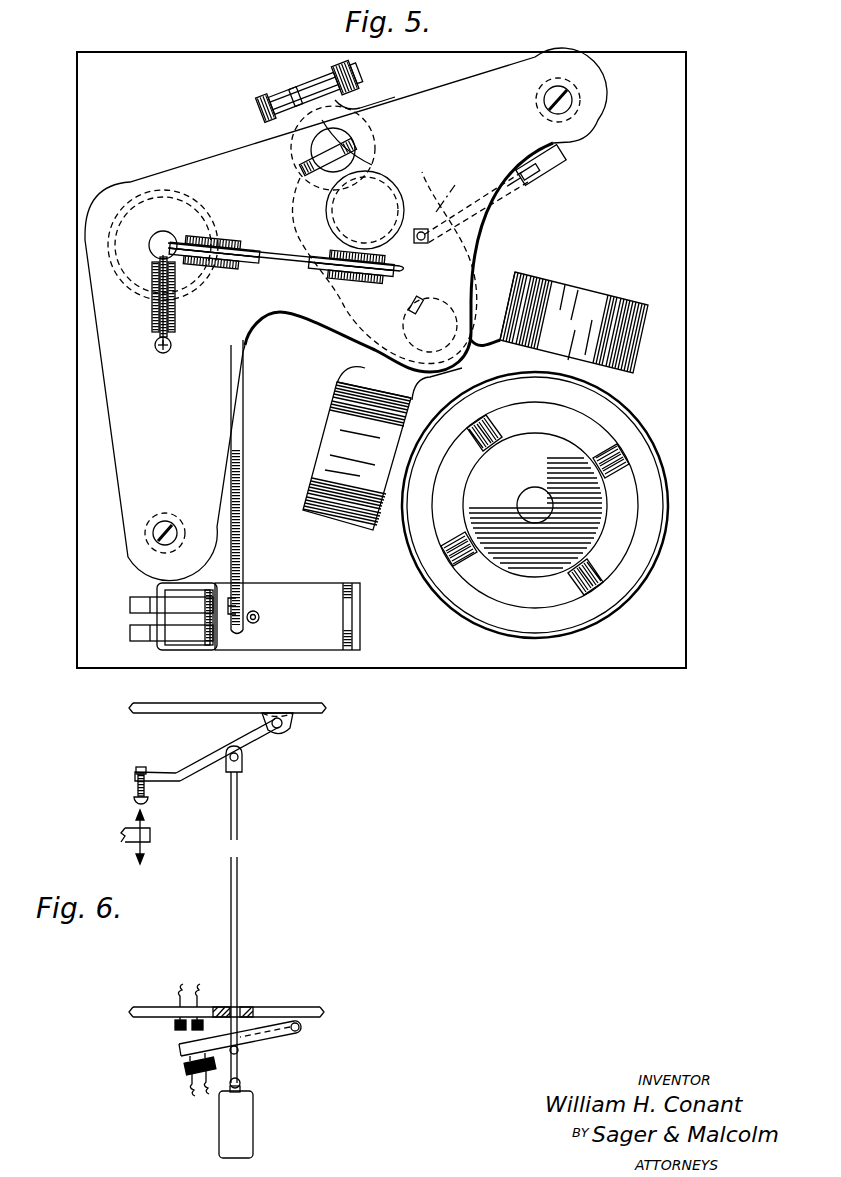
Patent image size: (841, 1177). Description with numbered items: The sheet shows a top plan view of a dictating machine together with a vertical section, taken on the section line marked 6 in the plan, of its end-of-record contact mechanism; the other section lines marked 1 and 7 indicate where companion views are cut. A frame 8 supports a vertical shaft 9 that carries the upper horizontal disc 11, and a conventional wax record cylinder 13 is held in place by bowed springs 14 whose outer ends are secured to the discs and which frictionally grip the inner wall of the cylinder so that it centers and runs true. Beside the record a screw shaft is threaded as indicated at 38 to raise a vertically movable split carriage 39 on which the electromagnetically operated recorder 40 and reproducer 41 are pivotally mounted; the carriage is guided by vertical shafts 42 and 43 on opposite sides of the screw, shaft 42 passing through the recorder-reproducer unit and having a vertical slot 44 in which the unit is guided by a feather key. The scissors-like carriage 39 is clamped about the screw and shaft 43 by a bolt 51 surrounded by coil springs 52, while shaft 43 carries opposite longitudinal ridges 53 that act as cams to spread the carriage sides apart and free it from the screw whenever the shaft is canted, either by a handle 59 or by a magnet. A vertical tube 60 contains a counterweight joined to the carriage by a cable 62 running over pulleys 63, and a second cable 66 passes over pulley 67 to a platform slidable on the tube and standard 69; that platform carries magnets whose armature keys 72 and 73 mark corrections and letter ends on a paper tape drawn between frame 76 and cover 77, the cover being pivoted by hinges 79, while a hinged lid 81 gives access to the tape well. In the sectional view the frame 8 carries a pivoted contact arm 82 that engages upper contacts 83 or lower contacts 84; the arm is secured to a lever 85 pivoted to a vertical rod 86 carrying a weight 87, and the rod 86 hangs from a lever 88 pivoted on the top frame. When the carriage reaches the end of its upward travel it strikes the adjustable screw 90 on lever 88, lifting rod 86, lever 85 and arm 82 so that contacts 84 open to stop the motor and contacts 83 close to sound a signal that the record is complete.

In FIG. 5, the section line 1- 1 is at (322, 125).
In FIG. 5, the section line 6- 6 is at (568, 152).
In FIG. 5, the section line 7- 7 is at (163, 228).
In FIG. 6, the frame 8 is at (230, 997).
In FIG. 5, the vertical shaft 9 is at (517, 502).
In FIG. 5, the upper horizontal disc 11 is at (539, 450).
In FIG. 5, the wax record cylinder 13 is at (618, 585).
In FIG. 5, the springs 14 is at (478, 440).
In FIG. 5, the screw 38 is at (385, 200).
In FIG. 5, the split carriage 39 is at (425, 190).
In FIG. 6, the split carriage 39 is at (150, 836).
In FIG. 5, the recorder 40 is at (582, 302).
In FIG. 5, the reproducer 41 is at (333, 416).
In FIG. 5, the vertical shaft 42 is at (472, 320).
In FIG. 5, the vertical shaft 43 is at (345, 146).
In FIG. 5, the vertical slot 44 is at (385, 268).
In FIG. 5, the bolt 51 is at (268, 110).
In FIG. 5, the coil springs 52 is at (280, 98).
In FIG. 5, the longitudinal ridges 53 is at (372, 136).
In FIG. 5, the handle 59 is at (372, 165).
In FIG. 5, the vertical tube 60 is at (140, 213).
In FIG. 5, the cable 62 is at (282, 262).
In FIG. 5, the pulleys 63 is at (251, 266).
In FIG. 5, the second cable 66 is at (160, 350).
In FIG. 5, the pulley 67 is at (152, 305).
In FIG. 5, the standard 69 is at (173, 518).
In FIG. 5, the armature key 72 is at (244, 505).
In FIG. 5, the armature key 73 is at (244, 622).
In FIG. 5, the frame 76 is at (130, 618).
In FIG. 5, the cover 77 is at (212, 645).
In FIG. 5, the hinges 79 is at (160, 585).
In FIG. 5, the hinged lid 81 is at (330, 616).
In FIG. 6, the contact arm 82 is at (252, 1022).
In FIG. 6, the upper contacts 83 is at (175, 1027).
In FIG. 6, the lower contacts 84 is at (186, 1068).
In FIG. 6, the lever 85 is at (250, 1046).
In FIG. 6, the vertical rod 86 is at (240, 905).
In FIG. 6, the weight 87 is at (241, 1110).
In FIG. 5, the lever 88 is at (522, 182).
In FIG. 6, the lever 88 is at (257, 736).
In FIG. 6, the screw 90 is at (148, 797).